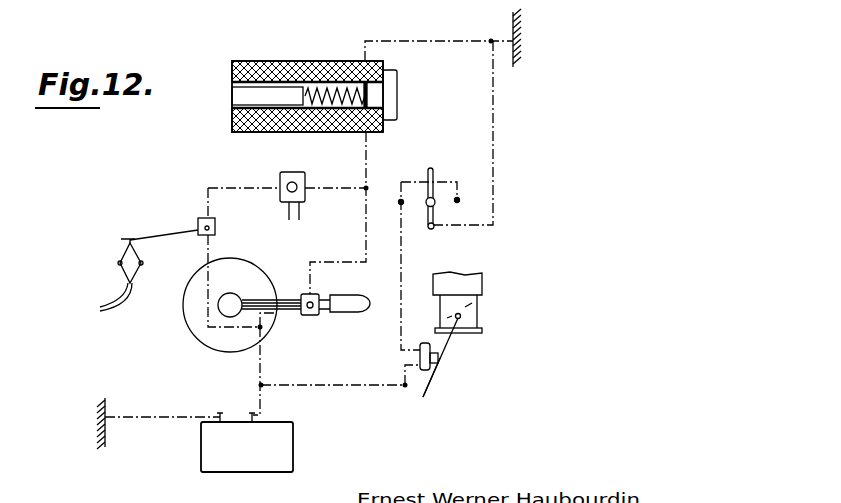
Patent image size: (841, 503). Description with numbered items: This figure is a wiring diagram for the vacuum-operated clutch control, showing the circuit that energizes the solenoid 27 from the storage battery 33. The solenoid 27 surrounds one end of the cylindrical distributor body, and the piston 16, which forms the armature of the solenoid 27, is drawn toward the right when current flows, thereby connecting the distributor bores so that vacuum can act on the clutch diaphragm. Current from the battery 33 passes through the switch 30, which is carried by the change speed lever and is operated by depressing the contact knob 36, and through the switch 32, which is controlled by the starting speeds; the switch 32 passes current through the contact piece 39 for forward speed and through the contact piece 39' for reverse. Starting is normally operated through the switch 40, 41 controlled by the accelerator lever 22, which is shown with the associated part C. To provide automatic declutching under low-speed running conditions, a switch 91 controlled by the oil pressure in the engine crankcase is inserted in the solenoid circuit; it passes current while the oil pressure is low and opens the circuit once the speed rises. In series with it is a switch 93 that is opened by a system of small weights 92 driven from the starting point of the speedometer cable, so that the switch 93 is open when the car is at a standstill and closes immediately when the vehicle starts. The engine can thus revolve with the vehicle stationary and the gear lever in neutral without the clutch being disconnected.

The piston 16 is at (263, 90).
The solenoid 27 is at (372, 128).
The switch 91 is at (286, 172).
The switch 93 is at (203, 218).
The system of small weights 92 is at (120, 260).
The contact knob 36 is at (309, 316).
The switch 30 is at (320, 316).
The counter C is at (478, 283).
The accelerator lever 22 is at (448, 345).
The switch 40 is at (425, 390).
The switch 41 is at (421, 344).
The contact piece 39 is at (392, 182).
The contact piece 39' is at (476, 181).
The switch 32 is at (433, 185).
The storage battery 33 is at (280, 451).